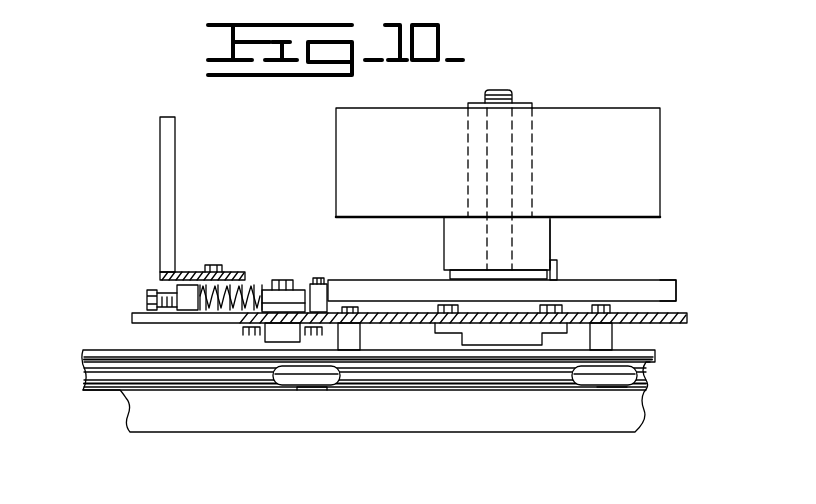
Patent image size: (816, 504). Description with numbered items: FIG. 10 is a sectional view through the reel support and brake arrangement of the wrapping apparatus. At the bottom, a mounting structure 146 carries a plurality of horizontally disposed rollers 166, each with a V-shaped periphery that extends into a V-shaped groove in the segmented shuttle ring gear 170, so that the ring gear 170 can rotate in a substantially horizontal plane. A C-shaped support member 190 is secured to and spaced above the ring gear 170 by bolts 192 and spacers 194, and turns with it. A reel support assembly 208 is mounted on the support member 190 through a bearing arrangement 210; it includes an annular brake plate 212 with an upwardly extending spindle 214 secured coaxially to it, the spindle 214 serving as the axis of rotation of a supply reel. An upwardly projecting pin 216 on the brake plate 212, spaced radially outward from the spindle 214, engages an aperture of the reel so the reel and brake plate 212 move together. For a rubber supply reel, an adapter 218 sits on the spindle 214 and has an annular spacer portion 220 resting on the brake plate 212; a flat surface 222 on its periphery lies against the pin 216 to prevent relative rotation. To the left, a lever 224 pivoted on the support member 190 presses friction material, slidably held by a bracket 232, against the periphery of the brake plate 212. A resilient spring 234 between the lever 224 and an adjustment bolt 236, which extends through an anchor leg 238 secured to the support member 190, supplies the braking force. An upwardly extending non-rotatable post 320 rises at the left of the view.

The mounting structure 146 is at (532, 425).
The segmented shuttle ring gear 170 is at (220, 373).
The rollers 166 is at (290, 380).
The support member 190 is at (240, 318).
The spacers 194 is at (353, 343).
The bearing arrangement 210 is at (492, 338).
The bolts 192 is at (608, 301).
The brake plate 212 is at (677, 295).
The reel support assembly 208 is at (627, 267).
The adapter 218 is at (530, 105).
The spindle 214 is at (505, 243).
The annular spacer portion 220 is at (448, 244).
The flat surface 222 is at (551, 233).
The pin 216 is at (558, 268).
The post 320 is at (160, 147).
The anchor leg 238 is at (188, 292).
The adjustment bolt 236 is at (148, 297).
The resilient spring 234 is at (247, 287).
The lever 224 is at (283, 283).
The bracket 232 is at (313, 297).